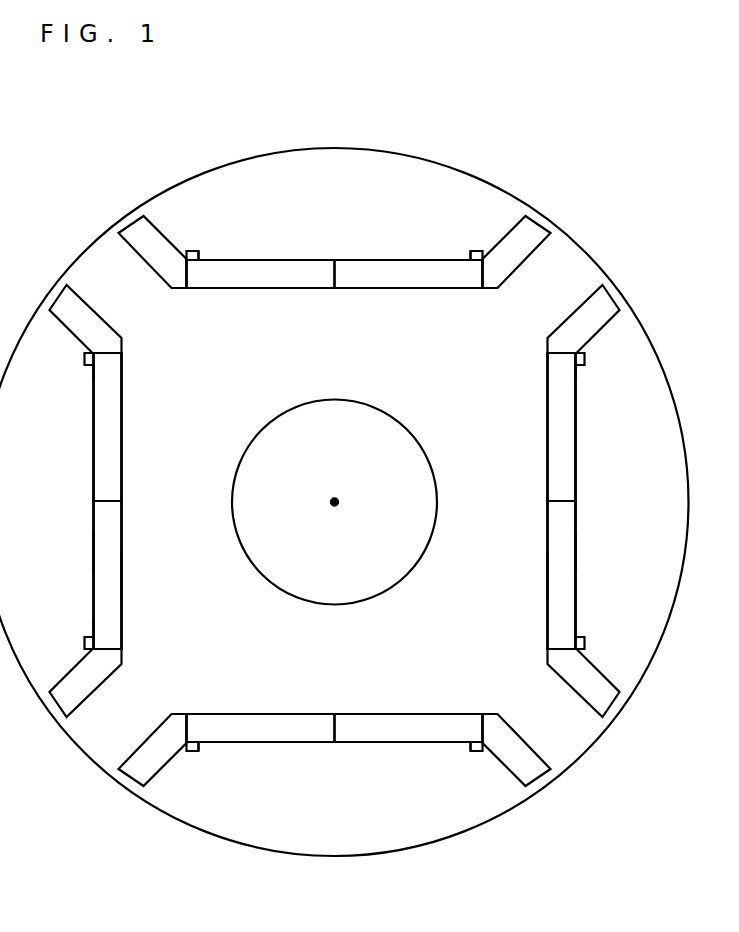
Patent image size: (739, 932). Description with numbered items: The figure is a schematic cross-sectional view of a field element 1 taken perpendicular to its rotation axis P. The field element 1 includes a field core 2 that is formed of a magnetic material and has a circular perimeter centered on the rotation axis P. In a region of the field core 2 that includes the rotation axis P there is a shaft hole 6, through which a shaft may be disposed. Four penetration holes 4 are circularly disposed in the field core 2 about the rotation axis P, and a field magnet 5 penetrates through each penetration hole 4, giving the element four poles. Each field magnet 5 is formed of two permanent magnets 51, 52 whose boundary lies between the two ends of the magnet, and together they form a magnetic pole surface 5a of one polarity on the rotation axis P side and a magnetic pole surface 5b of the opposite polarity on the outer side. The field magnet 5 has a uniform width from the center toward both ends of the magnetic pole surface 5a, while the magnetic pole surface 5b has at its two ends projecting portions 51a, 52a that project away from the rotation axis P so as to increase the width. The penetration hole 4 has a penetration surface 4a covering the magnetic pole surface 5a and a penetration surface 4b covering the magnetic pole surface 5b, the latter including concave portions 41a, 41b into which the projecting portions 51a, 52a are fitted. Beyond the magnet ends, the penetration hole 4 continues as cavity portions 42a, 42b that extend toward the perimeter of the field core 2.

The field element 1 is at (601, 908).
The field core 2 is at (458, 823).
The penetration hole 4 is at (314, 257).
The penetration surface 4a is at (414, 282).
The penetration surface 4b is at (384, 262).
The concave portion 41a is at (201, 260).
The concave portion 41b is at (469, 260).
The cavity portion 42a is at (137, 232).
The cavity portion 42b is at (531, 232).
The field magnet 5 is at (335, 536).
The permanent magnet 51 is at (318, 277).
The permanent magnet 52 is at (305, 322).
The magnetic pole surface 5a is at (397, 290).
The magnetic pole surface 5b is at (366, 259).
The projecting portion 51a is at (190, 250).
The projecting portion 52a is at (477, 250).
The shaft hole 6 is at (392, 575).
The rotation axis P is at (338, 500).